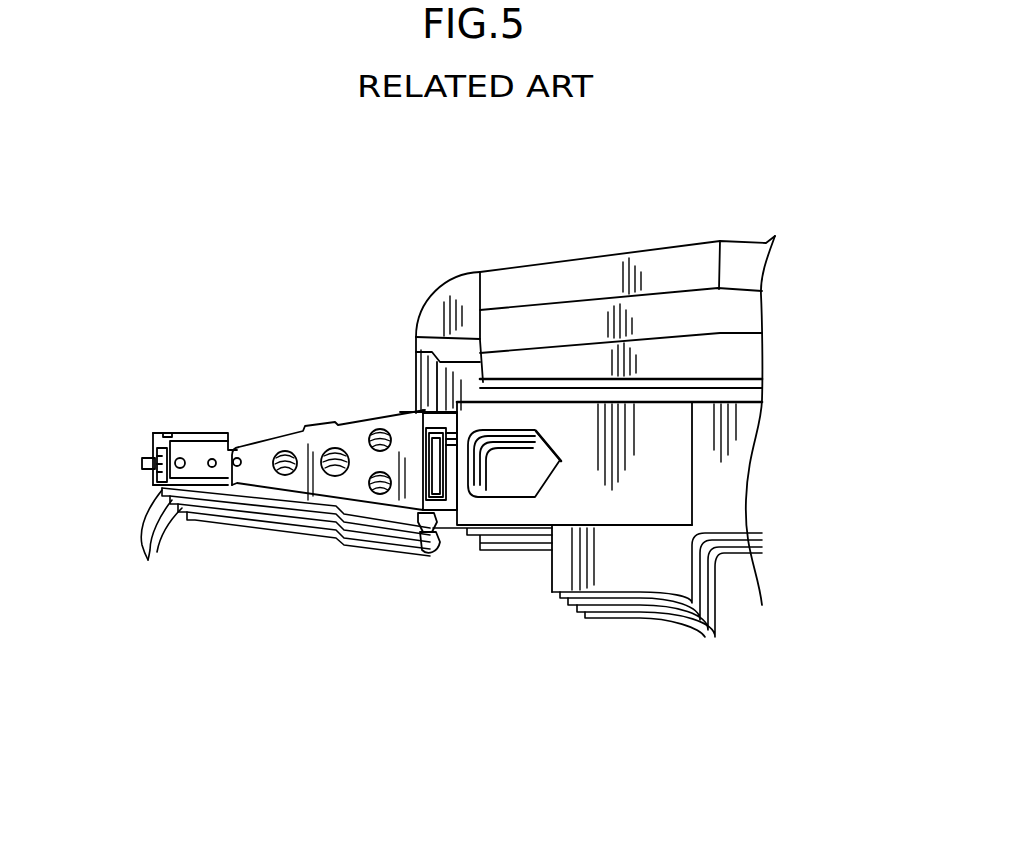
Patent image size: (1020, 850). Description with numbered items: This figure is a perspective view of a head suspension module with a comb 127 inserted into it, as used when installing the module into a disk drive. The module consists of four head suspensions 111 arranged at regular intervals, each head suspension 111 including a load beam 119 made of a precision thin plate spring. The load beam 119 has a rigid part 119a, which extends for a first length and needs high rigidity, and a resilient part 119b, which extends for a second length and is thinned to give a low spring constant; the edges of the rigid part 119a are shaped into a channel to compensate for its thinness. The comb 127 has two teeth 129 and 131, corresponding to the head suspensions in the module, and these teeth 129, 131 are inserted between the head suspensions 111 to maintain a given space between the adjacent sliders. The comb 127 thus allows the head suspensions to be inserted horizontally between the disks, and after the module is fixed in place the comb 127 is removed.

The comb 127 is at (456, 277).
The load beam 119 is at (313, 418).
The rigid part 119a is at (268, 437).
The resilient part 119b is at (420, 408).
The tooth 129 is at (403, 533).
The head suspension 111 is at (147, 558).
The tooth 131 is at (421, 553).